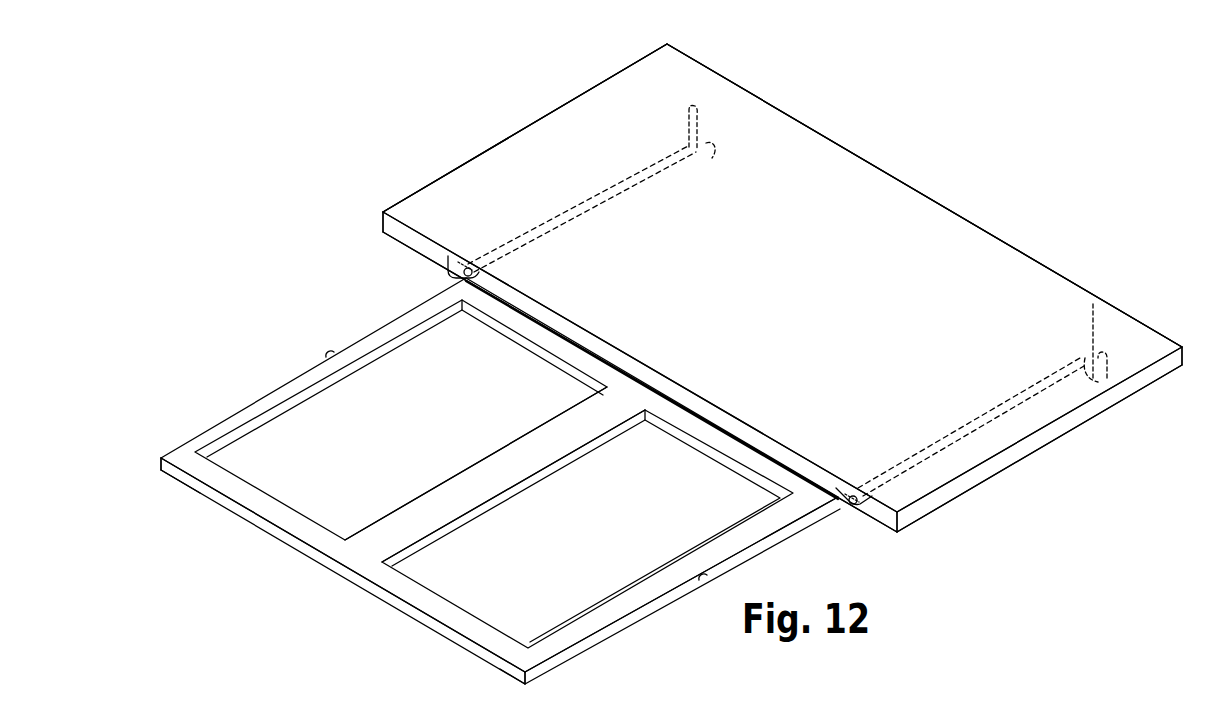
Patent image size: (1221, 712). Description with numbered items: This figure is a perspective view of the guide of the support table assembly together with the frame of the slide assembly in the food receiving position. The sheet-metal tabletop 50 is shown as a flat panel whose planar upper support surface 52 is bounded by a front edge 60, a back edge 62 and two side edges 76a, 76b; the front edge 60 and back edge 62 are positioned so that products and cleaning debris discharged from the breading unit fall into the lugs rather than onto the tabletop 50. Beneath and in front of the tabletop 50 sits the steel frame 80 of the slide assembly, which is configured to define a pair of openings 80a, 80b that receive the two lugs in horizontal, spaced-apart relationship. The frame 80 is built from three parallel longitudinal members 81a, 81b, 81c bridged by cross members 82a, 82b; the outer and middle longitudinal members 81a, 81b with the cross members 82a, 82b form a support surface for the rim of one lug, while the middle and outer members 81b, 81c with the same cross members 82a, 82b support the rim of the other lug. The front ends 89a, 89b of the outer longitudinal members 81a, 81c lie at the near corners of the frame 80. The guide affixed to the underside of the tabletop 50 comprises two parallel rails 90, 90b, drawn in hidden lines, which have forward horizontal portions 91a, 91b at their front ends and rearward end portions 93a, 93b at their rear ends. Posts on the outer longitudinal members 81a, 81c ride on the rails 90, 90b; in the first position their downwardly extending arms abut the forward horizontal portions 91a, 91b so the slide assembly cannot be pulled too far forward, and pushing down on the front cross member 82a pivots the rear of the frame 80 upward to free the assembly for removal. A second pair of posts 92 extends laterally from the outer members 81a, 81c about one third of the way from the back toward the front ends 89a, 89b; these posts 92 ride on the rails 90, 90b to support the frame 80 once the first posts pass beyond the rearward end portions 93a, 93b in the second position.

The tabletop 50 is at (905, 243).
The upper support surface 52 is at (975, 310).
The front edge 60 is at (410, 240).
The back edge 62 is at (978, 222).
The side edge 76a is at (922, 508).
The side edge 76b is at (457, 166).
The frame 80 is at (378, 600).
The opening 80a is at (513, 588).
The opening 80b is at (410, 387).
The outer longitudinal member 81a is at (583, 625).
The middle longitudinal member 81b is at (481, 489).
The outer longitudinal member 81c is at (282, 408).
The front cross member 82a is at (345, 565).
The cross member 82b is at (622, 398).
The front end 89a is at (517, 677).
The front end 89b is at (175, 472).
The rail 90 is at (953, 433).
The rail 90b is at (607, 197).
The forward horizontal portion 91a is at (847, 512).
The forward horizontal portion 91b is at (462, 270).
The second posts 92 is at (330, 354).
The rearward end portion 93a is at (1095, 300).
The rearward end portion 93b is at (700, 147).